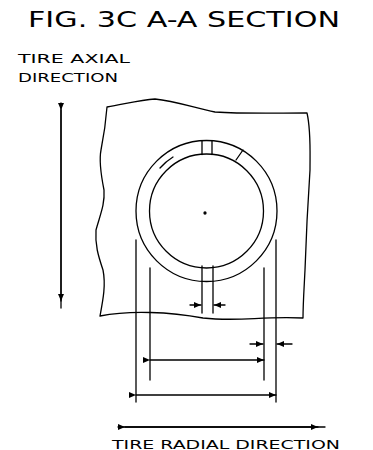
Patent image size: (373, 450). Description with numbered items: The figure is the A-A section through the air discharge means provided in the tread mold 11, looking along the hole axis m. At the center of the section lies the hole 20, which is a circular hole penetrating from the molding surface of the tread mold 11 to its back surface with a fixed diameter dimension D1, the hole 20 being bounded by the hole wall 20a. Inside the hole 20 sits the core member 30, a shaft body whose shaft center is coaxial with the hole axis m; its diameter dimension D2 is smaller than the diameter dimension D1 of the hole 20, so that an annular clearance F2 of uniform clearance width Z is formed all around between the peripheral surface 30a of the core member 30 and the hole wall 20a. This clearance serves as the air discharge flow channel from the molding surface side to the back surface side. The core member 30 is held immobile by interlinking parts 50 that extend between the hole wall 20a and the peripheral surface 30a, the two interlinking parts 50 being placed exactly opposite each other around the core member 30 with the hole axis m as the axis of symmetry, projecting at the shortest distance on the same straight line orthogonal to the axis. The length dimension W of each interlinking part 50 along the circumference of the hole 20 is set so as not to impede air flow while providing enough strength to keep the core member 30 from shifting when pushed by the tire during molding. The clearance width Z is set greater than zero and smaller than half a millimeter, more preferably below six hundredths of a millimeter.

The tread mold 11 is at (282, 111).
The interlinking part 50 is at (210, 142).
The hole 20 is at (167, 152).
The hole wall 20a is at (160, 168).
The core member 30 is at (218, 165).
The peripheral surface of the core member 30a is at (247, 160).
The annular clearance F2 is at (272, 201).
The hole axis m is at (208, 211).
The length dimension of the interlinking part W is at (219, 308).
The diameter dimension of the core member D2 is at (207, 324).
The diameter dimension of the hole D1 is at (206, 321).
The clearance width Z is at (270, 347).